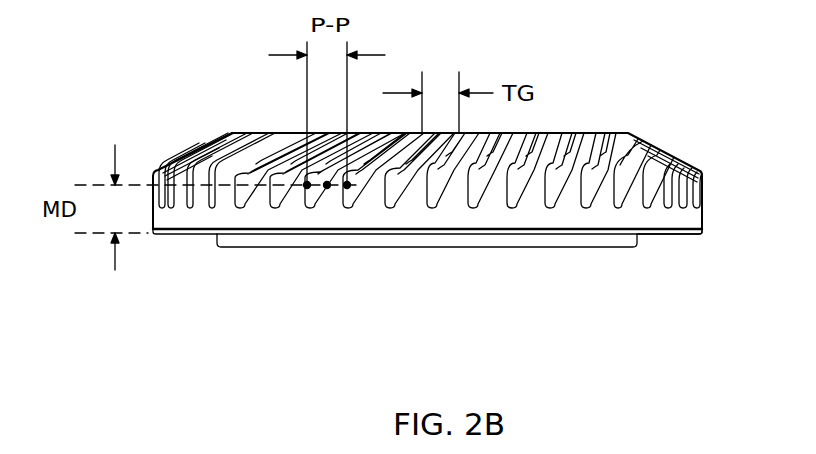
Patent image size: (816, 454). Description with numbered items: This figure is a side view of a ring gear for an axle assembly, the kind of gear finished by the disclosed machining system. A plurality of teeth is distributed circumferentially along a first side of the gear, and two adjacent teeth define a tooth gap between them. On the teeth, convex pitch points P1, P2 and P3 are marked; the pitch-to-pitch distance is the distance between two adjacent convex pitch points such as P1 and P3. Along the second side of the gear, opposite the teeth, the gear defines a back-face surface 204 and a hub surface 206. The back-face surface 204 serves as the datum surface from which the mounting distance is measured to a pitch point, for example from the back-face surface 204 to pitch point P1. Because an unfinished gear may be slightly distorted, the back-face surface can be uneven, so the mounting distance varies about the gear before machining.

The back-face surface 204 is at (672, 234).
The hub surface 206 is at (510, 247).
The pitch point P1 is at (307, 188).
The pitch point P2 is at (327, 188).
The pitch point P3 is at (347, 188).